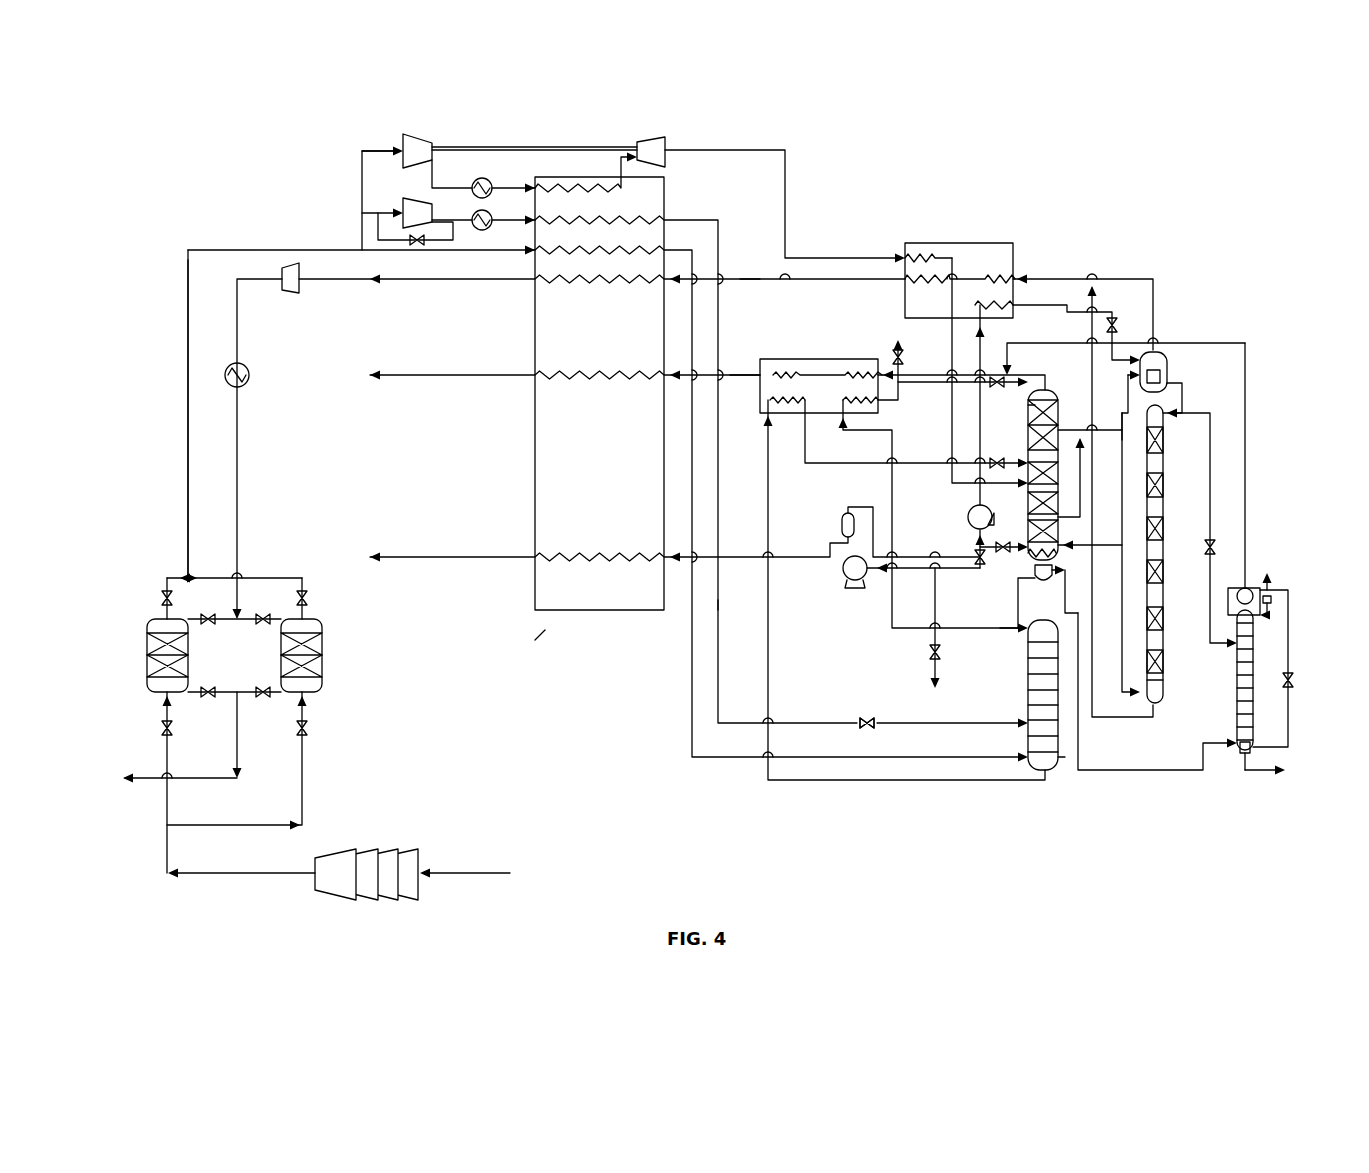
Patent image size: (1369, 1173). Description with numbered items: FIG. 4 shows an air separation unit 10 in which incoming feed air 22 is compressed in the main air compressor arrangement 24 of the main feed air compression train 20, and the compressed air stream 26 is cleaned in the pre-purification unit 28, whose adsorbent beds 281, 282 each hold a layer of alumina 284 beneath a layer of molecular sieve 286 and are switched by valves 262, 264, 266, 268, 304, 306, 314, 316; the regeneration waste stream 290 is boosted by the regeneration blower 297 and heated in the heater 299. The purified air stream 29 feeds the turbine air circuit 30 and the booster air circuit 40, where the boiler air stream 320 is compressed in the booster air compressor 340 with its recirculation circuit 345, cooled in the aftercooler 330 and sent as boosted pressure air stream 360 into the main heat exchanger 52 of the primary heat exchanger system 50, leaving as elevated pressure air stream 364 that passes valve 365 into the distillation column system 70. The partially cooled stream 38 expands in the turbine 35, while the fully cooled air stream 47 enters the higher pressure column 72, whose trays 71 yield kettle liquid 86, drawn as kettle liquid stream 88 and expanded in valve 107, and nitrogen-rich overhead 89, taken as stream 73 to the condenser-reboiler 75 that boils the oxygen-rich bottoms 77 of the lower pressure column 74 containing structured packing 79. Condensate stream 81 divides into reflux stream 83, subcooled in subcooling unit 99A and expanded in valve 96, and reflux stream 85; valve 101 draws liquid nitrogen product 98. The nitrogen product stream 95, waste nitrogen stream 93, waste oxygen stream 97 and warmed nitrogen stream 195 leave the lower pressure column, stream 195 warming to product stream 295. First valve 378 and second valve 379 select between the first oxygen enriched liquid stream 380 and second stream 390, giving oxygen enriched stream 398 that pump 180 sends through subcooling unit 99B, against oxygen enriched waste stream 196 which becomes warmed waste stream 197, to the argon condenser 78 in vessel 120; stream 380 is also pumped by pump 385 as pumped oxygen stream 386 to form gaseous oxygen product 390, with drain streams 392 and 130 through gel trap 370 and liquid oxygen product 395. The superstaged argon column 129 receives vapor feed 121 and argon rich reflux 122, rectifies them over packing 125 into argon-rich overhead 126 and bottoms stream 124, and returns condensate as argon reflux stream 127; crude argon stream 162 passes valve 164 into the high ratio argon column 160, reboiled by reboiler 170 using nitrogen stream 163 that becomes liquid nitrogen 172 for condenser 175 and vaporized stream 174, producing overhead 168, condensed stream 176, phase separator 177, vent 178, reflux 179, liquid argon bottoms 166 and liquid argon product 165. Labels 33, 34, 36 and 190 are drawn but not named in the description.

The air separation unit 10 is at (200, 148).
The main feed air compression train 20 is at (435, 925).
The incoming feed air 22 is at (478, 873).
The main air compressor arrangement 24 is at (365, 885).
The compressed air stream 26 is at (250, 873).
The pre-purification unit 28 is at (95, 638).
The compressed and purified air stream 29 is at (188, 360).
The turbine air circuit 30 is at (541, 135).
The heat exchanger 33 is at (482, 178).
The refrigerant compressor 34 is at (425, 135).
The turbine 35 is at (652, 133).
The heat exchanger 36 is at (492, 212).
The partially cooled feed air stream 38 is at (620, 162).
The booster air circuit 40 is at (350, 233).
The fully cooled air stream 47 is at (692, 697).
The primary heat exchanger system 50 is at (560, 648).
The main heat exchanger 52 is at (607, 612).
The distillation column system 70 is at (1002, 838).
The trays 71 is at (1030, 722).
The higher pressure column 72 is at (1060, 757).
The nitrogen-rich vapor overhead stream 73 is at (1060, 575).
The lower pressure column 74 is at (1058, 408).
The condenser-reboiler 75 is at (1011, 603).
The oxygen-rich liquid column bottoms 77 is at (1026, 590).
The argon condenser 78 is at (1160, 372).
The structured packing 79 is at (1030, 425).
The liquid nitrogen containing stream 81 is at (1015, 610).
The clean shelf reflux stream 83 is at (893, 638).
The nitrogen-rich reflux stream 85 is at (1020, 632).
The crude liquid oxygen column bottoms 86 is at (1045, 775).
The kettle liquid stream 88 is at (893, 780).
The nitrogen-rich column overhead 89 is at (1068, 628).
The waste nitrogen stream 93 is at (1112, 432).
The gaseous nitrogen product stream 95 is at (1023, 375).
The valve 96 is at (963, 403).
The vapor waste oxygen stream 97 is at (1071, 477).
The liquid nitrogen product 98 is at (897, 345).
The subcooling unit 99A is at (770, 359).
The subcooling unit 99B is at (915, 243).
The valve 101 is at (905, 370).
The valve 107 is at (990, 460).
The argon condenser vessel 120 is at (1165, 355).
The argon and oxygen containing vapor feed 121 is at (1118, 520).
The argon rich reflux 122 is at (1163, 420).
The oxygen-rich liquid bottoms stream 124 is at (1118, 722).
The mass transfer contacting elements 125 is at (1165, 480).
The argon-rich overhead vapor 126 is at (1128, 407).
The argon reflux stream 127 is at (1182, 400).
The superstaged argon column 129 is at (1165, 605).
The liquid drain stream 130 is at (1133, 445).
The high ratio argon column 160 is at (1235, 712).
The crude liquid argon stream 162 is at (1212, 470).
The nitrogen-rich overhead stream 163 is at (1138, 770).
The valve 164 is at (1215, 530).
The high purity liquid argon product stream 165 is at (1262, 775).
The liquid argon bottoms 166 is at (1255, 757).
The high ratio column overhead 168 is at (1236, 592).
The high ratio column reboiler 170 is at (1243, 755).
The liquid nitrogen stream 172 is at (1288, 730).
The vaporized nitrogen stream 174 is at (1245, 400).
The high ratio column condenser 175 is at (1256, 585).
The condensed overhead stream 176 is at (1250, 612).
The phase separator 177 is at (1272, 599).
The vaporized portion 178 is at (1272, 585).
The liquid portion 179 is at (1268, 616).
The pump 180 is at (966, 517).
The valve 190 is at (1118, 360).
The warmed nitrogen stream 195 is at (733, 375).
The oxygen enriched waste stream 196 is at (1143, 279).
The warmed oxygen enriched waste stream 197 is at (743, 279).
The valve 262 is at (160, 732).
The valve 264 is at (310, 732).
The valve 266 is at (160, 595).
The valve 268 is at (310, 597).
The adsorbent bed 281 is at (150, 690).
The adsorbent bed 282 is at (320, 690).
The layer of alumina 284 is at (150, 668).
The layer of molecular sieve 286 is at (150, 645).
The regeneration waste stream 290 is at (445, 282).
The warmed gaseous nitrogen product stream 295 is at (445, 375).
The regeneration blower 297 is at (290, 293).
The heater 299 is at (248, 382).
The valve 304 is at (206, 614).
The valve 306 is at (262, 614).
The valve 314 is at (208, 698).
The valve 316 is at (264, 698).
The boiler air stream 320 is at (378, 212).
The aftercooler 330 is at (482, 232).
The booster air compressor 340 is at (415, 205).
The recirculation circuit 345 is at (433, 242).
The boosted pressure air stream 360 is at (505, 222).
The elevated pressure air stream 364 is at (768, 150).
The valve 365 is at (862, 716).
The gel trap 370 is at (848, 512).
The first valve 378 is at (978, 565).
The second valve 379 is at (1005, 540).
The first oxygen enriched liquid stream 380 is at (905, 566).
The pump 385 is at (845, 570).
The pumped oxygen stream 386 is at (739, 597).
The high purity gaseous oxygen product stream 390 is at (455, 557).
The drain stream 392 is at (923, 578).
The liquid oxygen product 395 is at (930, 668).
The oxygen enriched stream 398 is at (975, 500).